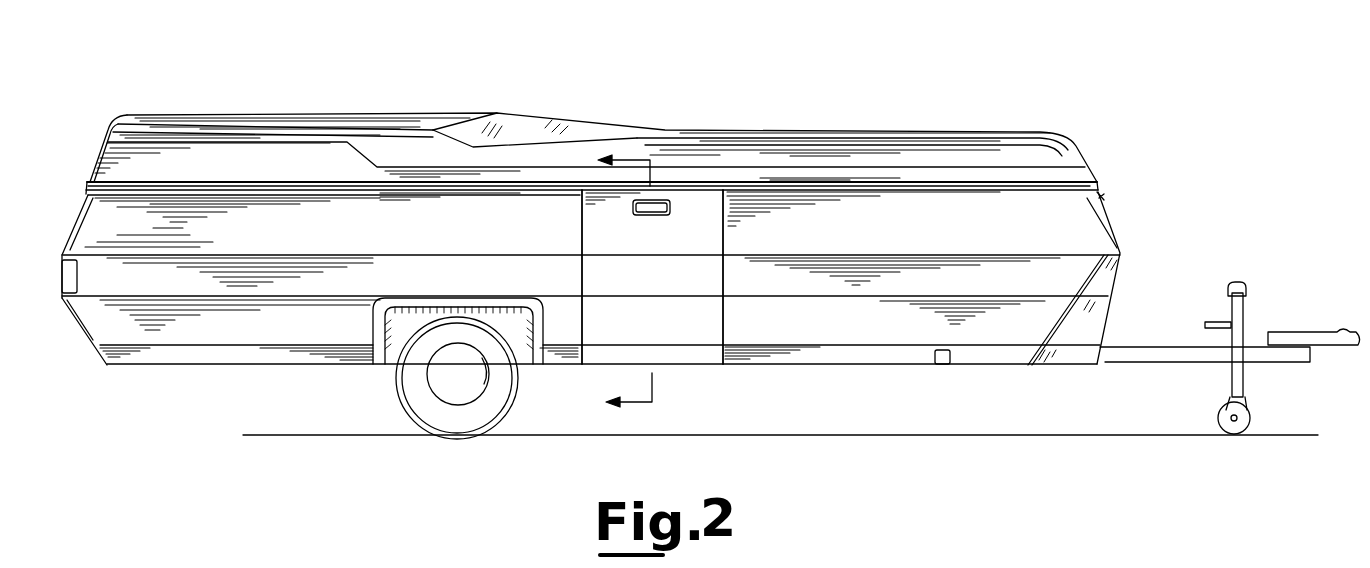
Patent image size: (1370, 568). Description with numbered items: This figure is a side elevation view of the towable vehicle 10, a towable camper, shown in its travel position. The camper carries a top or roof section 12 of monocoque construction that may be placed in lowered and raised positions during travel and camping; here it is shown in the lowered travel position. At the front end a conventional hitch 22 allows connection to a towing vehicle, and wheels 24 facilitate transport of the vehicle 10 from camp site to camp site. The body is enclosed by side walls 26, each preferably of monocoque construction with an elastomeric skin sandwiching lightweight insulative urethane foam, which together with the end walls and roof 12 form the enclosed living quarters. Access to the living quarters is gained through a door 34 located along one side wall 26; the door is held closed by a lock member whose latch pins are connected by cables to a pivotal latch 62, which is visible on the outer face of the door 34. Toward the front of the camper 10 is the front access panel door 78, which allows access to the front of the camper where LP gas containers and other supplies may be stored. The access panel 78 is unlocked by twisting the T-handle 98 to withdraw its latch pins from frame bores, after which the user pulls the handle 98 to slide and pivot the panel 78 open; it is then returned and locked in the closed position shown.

The towable vehicle 10 is at (711, 254).
The roof section 12 is at (840, 130).
The hitch 22 is at (1172, 347).
The wheels 24 is at (451, 420).
The side walls 26 is at (846, 340).
The door 34 is at (671, 253).
The pivotal latch 62 is at (660, 201).
The front access panel door 78 is at (1120, 236).
The T-handle 98 is at (1101, 198).